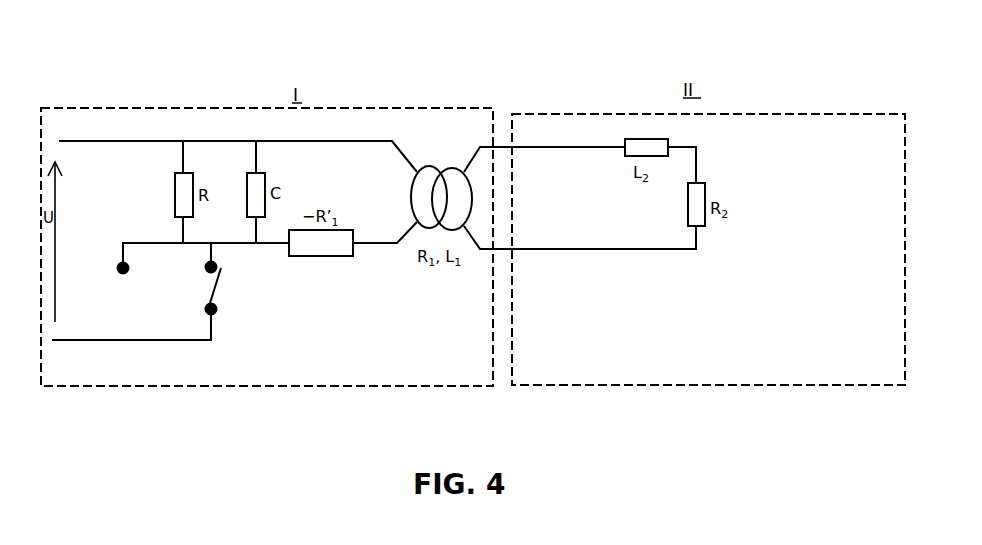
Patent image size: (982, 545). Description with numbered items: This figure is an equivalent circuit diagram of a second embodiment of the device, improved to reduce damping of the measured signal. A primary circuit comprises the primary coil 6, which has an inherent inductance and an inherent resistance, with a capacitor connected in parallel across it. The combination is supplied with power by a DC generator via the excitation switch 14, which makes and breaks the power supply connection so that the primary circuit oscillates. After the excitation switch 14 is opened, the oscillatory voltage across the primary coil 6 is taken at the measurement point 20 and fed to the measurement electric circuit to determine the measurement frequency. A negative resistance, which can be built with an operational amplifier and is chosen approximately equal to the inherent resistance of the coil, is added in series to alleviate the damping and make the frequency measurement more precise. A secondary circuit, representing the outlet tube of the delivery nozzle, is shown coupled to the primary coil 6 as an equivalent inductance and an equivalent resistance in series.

The primary coil 6 is at (444, 148).
The excitation switch 14 is at (223, 290).
The measurement point 20 is at (121, 272).